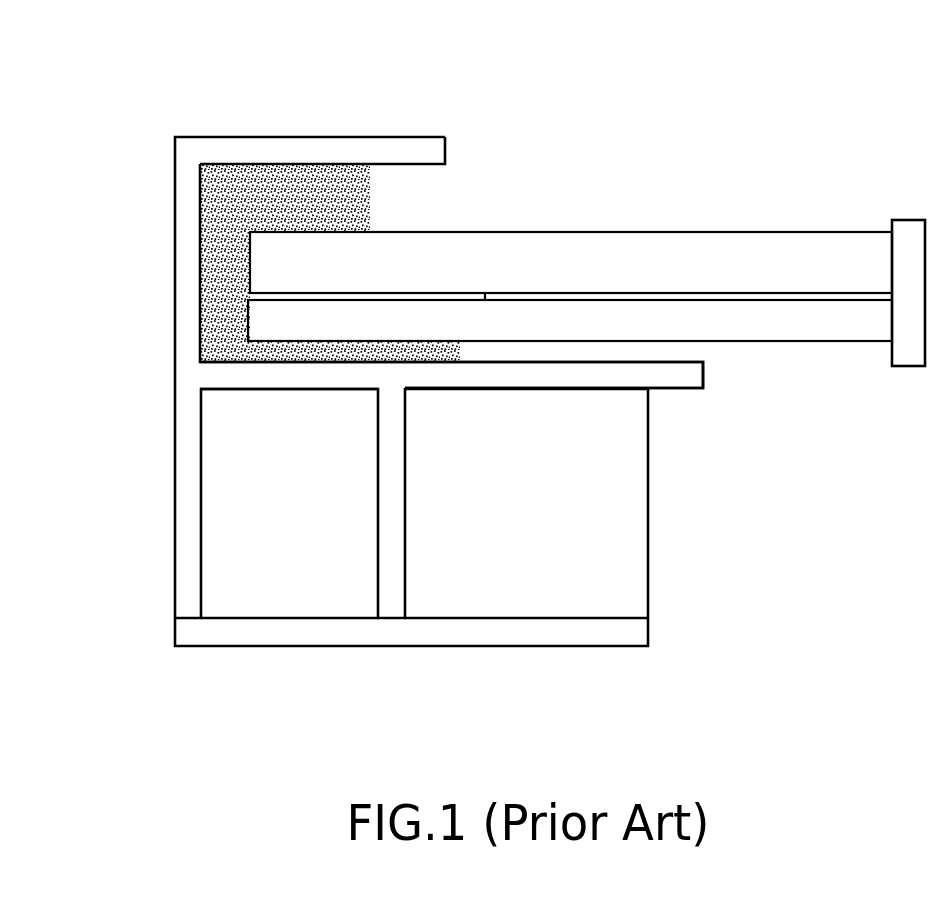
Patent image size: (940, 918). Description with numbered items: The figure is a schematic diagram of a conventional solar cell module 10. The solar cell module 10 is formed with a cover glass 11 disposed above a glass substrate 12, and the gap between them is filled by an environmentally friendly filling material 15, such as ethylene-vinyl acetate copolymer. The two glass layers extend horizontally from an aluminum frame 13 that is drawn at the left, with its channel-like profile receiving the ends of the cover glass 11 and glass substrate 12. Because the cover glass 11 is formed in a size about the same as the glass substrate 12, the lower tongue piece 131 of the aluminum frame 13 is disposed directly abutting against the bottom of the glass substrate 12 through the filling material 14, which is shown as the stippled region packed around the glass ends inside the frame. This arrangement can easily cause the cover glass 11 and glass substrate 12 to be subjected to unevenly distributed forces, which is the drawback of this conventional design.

The solar cell module 10 is at (562, 100).
The cover glass 11 is at (740, 260).
The glass substrate 12 is at (816, 328).
The aluminum frame 13 is at (175, 390).
The lower tongue piece 131 is at (663, 388).
The filling material 14 is at (297, 345).
The filling material 15 is at (855, 296).